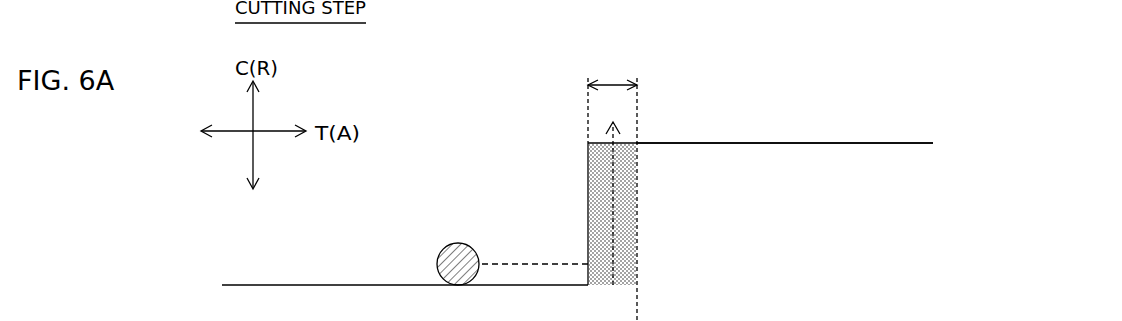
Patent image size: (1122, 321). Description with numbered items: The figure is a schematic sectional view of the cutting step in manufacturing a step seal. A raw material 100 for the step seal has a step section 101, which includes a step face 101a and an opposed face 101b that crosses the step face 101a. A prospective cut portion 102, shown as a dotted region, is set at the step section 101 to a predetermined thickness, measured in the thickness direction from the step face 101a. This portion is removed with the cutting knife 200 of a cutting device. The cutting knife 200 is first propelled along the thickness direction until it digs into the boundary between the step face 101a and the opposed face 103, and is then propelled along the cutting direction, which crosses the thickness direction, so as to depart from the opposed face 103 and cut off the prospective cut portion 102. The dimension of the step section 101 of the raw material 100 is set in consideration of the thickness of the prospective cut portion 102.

The raw material 100 is at (577, 168).
The step section 101 is at (817, 205).
The step face 101a is at (588, 186).
The opposed face 101b is at (886, 143).
The prospective cut portion 102 is at (628, 218).
The opposed face 103 is at (333, 285).
The cutting knife 200 is at (458, 243).